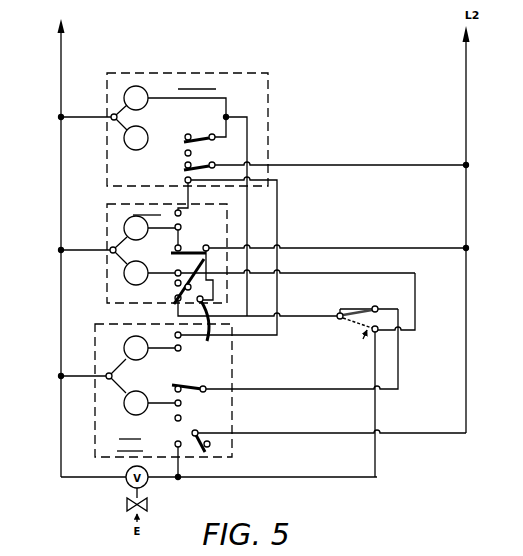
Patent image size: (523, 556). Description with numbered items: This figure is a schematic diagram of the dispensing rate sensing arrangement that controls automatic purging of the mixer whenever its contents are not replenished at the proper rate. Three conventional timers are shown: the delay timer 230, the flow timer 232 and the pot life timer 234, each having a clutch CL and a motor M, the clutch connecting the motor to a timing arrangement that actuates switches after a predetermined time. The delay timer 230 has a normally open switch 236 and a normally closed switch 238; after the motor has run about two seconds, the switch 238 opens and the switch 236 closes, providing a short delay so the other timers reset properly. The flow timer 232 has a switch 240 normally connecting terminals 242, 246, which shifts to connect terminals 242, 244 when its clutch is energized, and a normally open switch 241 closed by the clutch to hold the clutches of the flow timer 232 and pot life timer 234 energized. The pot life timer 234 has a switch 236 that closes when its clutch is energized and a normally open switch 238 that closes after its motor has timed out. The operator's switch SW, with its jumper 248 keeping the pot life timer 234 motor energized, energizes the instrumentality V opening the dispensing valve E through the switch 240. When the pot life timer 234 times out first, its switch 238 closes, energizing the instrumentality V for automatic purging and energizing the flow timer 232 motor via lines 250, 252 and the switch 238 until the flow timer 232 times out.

The delay timer 230 is at (160, 78).
The flow timer 232 is at (110, 300).
The pot life timer 234 is at (112, 435).
The switch 236 is at (178, 171).
The switch 238 is at (199, 129).
The switch 240 is at (176, 291).
The switch 241 is at (185, 245).
The terminal 242 is at (189, 280).
The terminal 244 is at (181, 301).
The terminal 246 is at (207, 326).
The jumper 248 is at (355, 308).
The line 250 is at (340, 273).
The line 252 is at (379, 462).